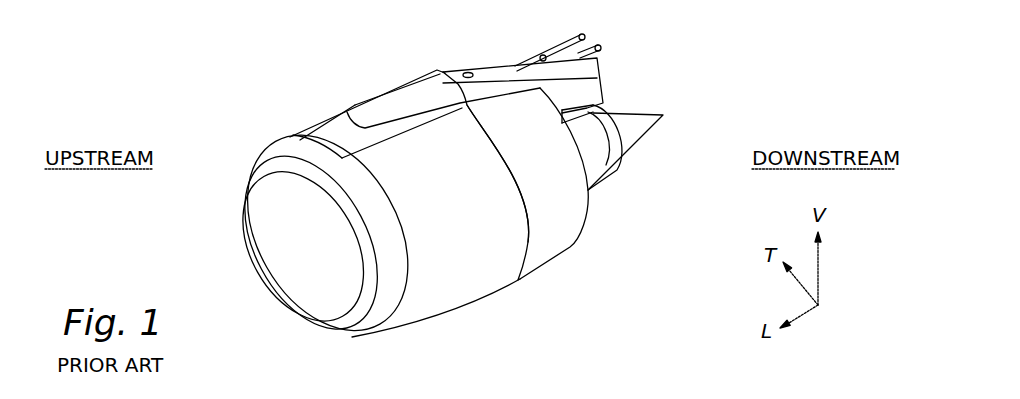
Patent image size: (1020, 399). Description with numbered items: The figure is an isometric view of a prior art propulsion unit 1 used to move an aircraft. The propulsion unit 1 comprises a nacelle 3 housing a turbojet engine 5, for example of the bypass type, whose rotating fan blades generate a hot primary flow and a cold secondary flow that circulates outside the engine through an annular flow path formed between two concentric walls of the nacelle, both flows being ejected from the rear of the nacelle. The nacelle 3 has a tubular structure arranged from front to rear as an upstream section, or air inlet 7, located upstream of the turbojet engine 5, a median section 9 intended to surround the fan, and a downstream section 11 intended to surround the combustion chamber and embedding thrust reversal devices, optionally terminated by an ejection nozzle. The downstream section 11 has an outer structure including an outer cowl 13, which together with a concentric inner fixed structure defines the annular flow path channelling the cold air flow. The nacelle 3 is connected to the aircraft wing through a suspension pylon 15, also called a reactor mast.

The propulsion unit 1 is at (296, 66).
The nacelle 3 is at (470, 281).
The turbojet engine 5 is at (643, 130).
The air inlet 7 is at (287, 145).
The median section 9 is at (415, 157).
The downstream section 11 is at (558, 229).
The outer cowl 13 is at (563, 207).
The suspension pylon 15 is at (494, 56).